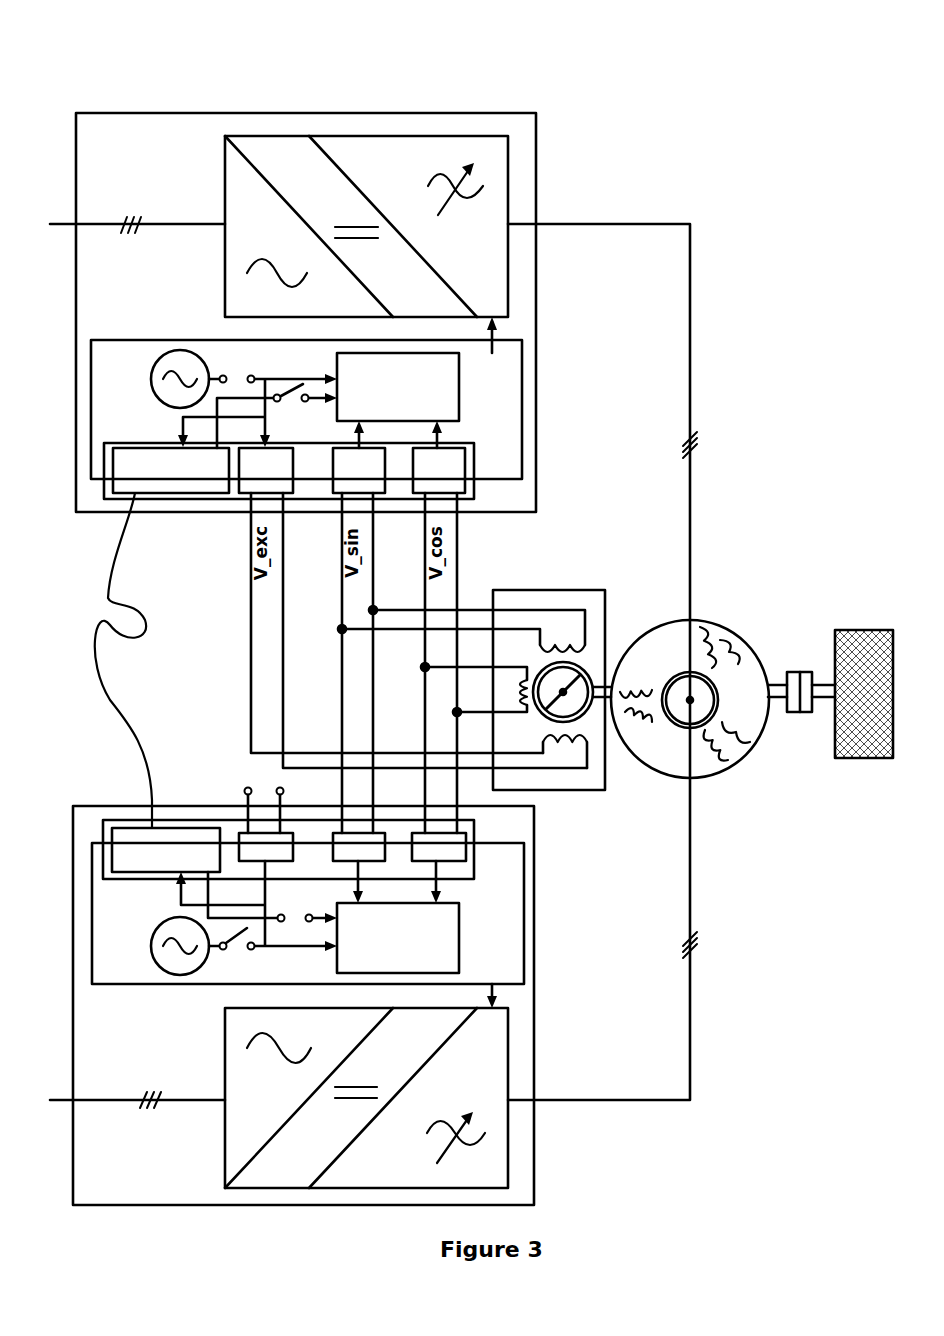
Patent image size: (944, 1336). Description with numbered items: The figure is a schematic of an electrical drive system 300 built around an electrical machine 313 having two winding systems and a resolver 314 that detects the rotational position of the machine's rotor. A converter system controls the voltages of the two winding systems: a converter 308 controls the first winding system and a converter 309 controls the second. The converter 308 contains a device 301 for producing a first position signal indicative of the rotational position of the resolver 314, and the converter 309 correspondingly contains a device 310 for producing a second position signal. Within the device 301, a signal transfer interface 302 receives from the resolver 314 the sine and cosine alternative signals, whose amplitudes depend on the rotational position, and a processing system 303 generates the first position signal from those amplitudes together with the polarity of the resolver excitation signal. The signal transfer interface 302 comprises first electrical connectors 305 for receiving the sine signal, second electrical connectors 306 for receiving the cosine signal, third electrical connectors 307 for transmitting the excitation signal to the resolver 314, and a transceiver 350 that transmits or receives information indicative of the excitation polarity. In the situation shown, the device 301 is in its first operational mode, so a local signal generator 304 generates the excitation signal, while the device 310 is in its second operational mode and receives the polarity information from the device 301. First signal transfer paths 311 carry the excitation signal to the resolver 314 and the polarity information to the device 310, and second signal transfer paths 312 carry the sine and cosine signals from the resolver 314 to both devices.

The electrical drive system 300 is at (748, 112).
The device for producing a first position signal 301 is at (103, 340).
The signal transfer interface 302 is at (474, 467).
The processing system 303 is at (380, 400).
The local signal generator 304 is at (151, 380).
The first electrical connectors 305 is at (341, 482).
The second electrical connectors 306 is at (421, 482).
The third electrical connectors 307 is at (248, 482).
The converter 308 is at (537, 200).
The converter 309 is at (534, 1018).
The device for producing a second position signal 310 is at (113, 985).
The first signal transfer paths 311 is at (140, 737).
The second signal transfer paths 312 is at (457, 725).
The electrical machine 313 is at (702, 620).
The resolver 314 is at (553, 590).
The transceiver 350 is at (153, 482).